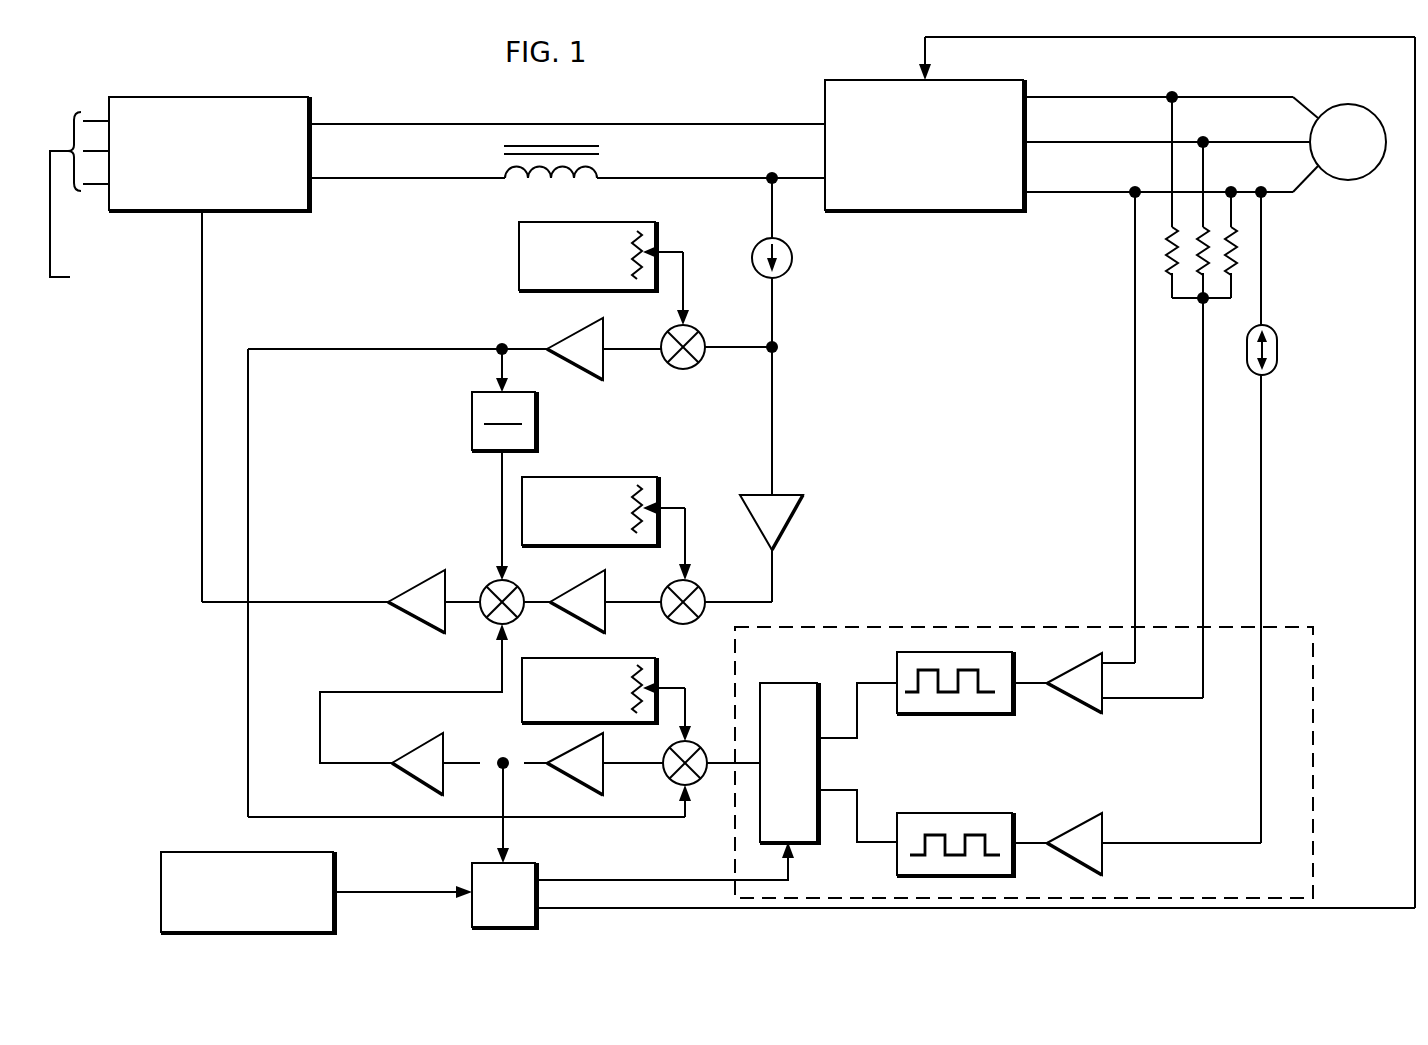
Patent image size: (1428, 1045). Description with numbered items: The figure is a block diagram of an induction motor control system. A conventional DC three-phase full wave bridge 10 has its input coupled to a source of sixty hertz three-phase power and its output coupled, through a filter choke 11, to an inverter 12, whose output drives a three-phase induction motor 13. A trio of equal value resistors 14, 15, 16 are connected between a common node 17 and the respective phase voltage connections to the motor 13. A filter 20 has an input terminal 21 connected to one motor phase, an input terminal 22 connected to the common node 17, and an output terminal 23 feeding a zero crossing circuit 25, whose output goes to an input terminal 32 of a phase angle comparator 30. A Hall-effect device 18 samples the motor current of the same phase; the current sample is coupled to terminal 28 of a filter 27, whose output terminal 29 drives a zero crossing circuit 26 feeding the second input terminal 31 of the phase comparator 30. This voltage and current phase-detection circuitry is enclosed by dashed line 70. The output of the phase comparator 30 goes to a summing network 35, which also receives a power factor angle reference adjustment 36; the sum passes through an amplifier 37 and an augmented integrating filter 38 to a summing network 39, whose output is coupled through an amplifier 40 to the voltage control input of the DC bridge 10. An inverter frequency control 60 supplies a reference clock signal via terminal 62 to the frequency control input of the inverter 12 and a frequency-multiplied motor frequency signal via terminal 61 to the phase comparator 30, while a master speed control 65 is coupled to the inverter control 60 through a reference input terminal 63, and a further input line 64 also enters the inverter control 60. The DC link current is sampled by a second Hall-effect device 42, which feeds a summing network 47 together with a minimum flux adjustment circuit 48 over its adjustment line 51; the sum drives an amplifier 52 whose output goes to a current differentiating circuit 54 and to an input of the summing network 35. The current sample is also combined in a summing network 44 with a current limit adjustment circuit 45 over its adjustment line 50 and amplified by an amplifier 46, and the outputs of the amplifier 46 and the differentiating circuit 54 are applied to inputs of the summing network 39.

The DC three-phase full wave bridge 10 is at (192, 97).
The filter choke 11 is at (532, 181).
The inverter 12 is at (958, 212).
The three-phase induction motor 13 is at (1348, 104).
The resistor 14 is at (1236, 245).
The resistor 15 is at (1215, 255).
The resistor 16 is at (1165, 257).
The common node 17 is at (1198, 304).
The Hall-effect device 18 is at (1279, 345).
The filter 20 is at (1076, 696).
The input terminal 21 is at (1118, 650).
The input terminal 22 is at (1112, 702).
The output terminal 23 is at (1042, 688).
The zero crossing circuit 25 is at (938, 714).
The zero crossing circuit 26 is at (964, 814).
The filter 27 is at (1078, 837).
The terminal 28 is at (1105, 843).
The comparator output line 29 is at (1042, 848).
The phase angle comparator 30 is at (784, 684).
The second input terminal 31 is at (822, 790).
The input terminal 32 is at (818, 736).
The summing network 35 is at (706, 780).
The power factor angle reference adjustment 36 is at (656, 666).
The amplifier 37 is at (568, 770).
The augmented integrating filter 38 is at (406, 770).
The summing network 39 is at (520, 590).
The amplifier 40 is at (418, 608).
The second Hall-effect device 42 is at (793, 258).
The summing network 44 is at (692, 584).
The current limit adjustment circuit 45 is at (632, 478).
The amplifier 46 is at (580, 608).
The summing network 47 is at (690, 370).
The minimum flux adjustment circuit 48 is at (615, 226).
The current limit signal line 50 is at (682, 506).
The minimum flux signal line 51 is at (686, 252).
The amplifier 52 is at (584, 370).
The current differentiating circuit 54 is at (472, 437).
The inverter frequency control 60 is at (520, 864).
The terminal 61 is at (567, 880).
The terminal 62 is at (588, 909).
The reference input terminal 63 is at (468, 894).
The feedback input line 64 is at (497, 858).
The master speed control 65 is at (162, 880).
The dashed line 70 is at (1315, 670).